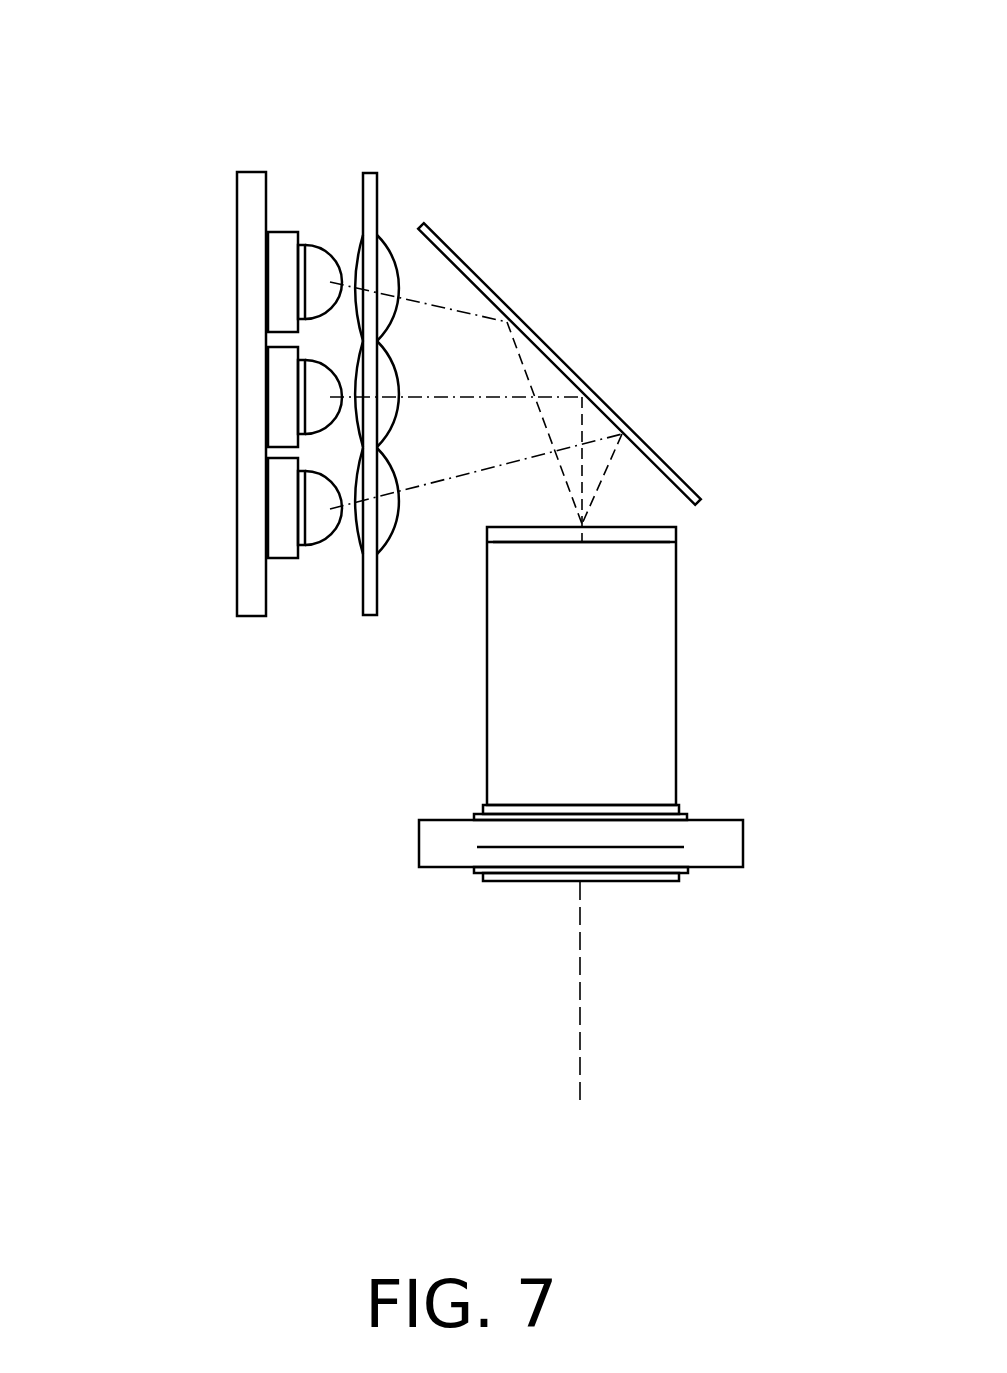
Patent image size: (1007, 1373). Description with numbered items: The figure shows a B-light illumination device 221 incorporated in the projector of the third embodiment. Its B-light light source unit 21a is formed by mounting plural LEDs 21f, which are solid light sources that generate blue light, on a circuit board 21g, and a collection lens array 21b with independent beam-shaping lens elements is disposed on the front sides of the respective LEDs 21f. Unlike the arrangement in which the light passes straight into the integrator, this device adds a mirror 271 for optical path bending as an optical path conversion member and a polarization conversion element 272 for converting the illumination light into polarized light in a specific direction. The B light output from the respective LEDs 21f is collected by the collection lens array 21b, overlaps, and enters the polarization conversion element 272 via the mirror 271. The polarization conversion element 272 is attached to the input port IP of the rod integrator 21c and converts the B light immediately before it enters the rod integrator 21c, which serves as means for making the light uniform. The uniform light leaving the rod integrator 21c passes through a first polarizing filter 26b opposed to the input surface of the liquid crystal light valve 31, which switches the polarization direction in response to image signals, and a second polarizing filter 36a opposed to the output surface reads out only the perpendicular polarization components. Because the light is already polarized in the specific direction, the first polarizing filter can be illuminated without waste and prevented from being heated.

The B-light illumination device 221 is at (712, 190).
The B-light light source unit 21a is at (251, 158).
The circuit board 21g is at (250, 603).
The LEDs 21f is at (277, 477).
The collection lens array 21b is at (372, 603).
The mirror 271 is at (450, 252).
The polarization conversion element 272 is at (630, 527).
The input port IP is at (503, 542).
The rod integrator 21c is at (647, 607).
The first polarizing filter 26b is at (613, 802).
The B-light liquid crystal light valve 31 is at (702, 826).
The second polarizing filter 36a is at (653, 882).